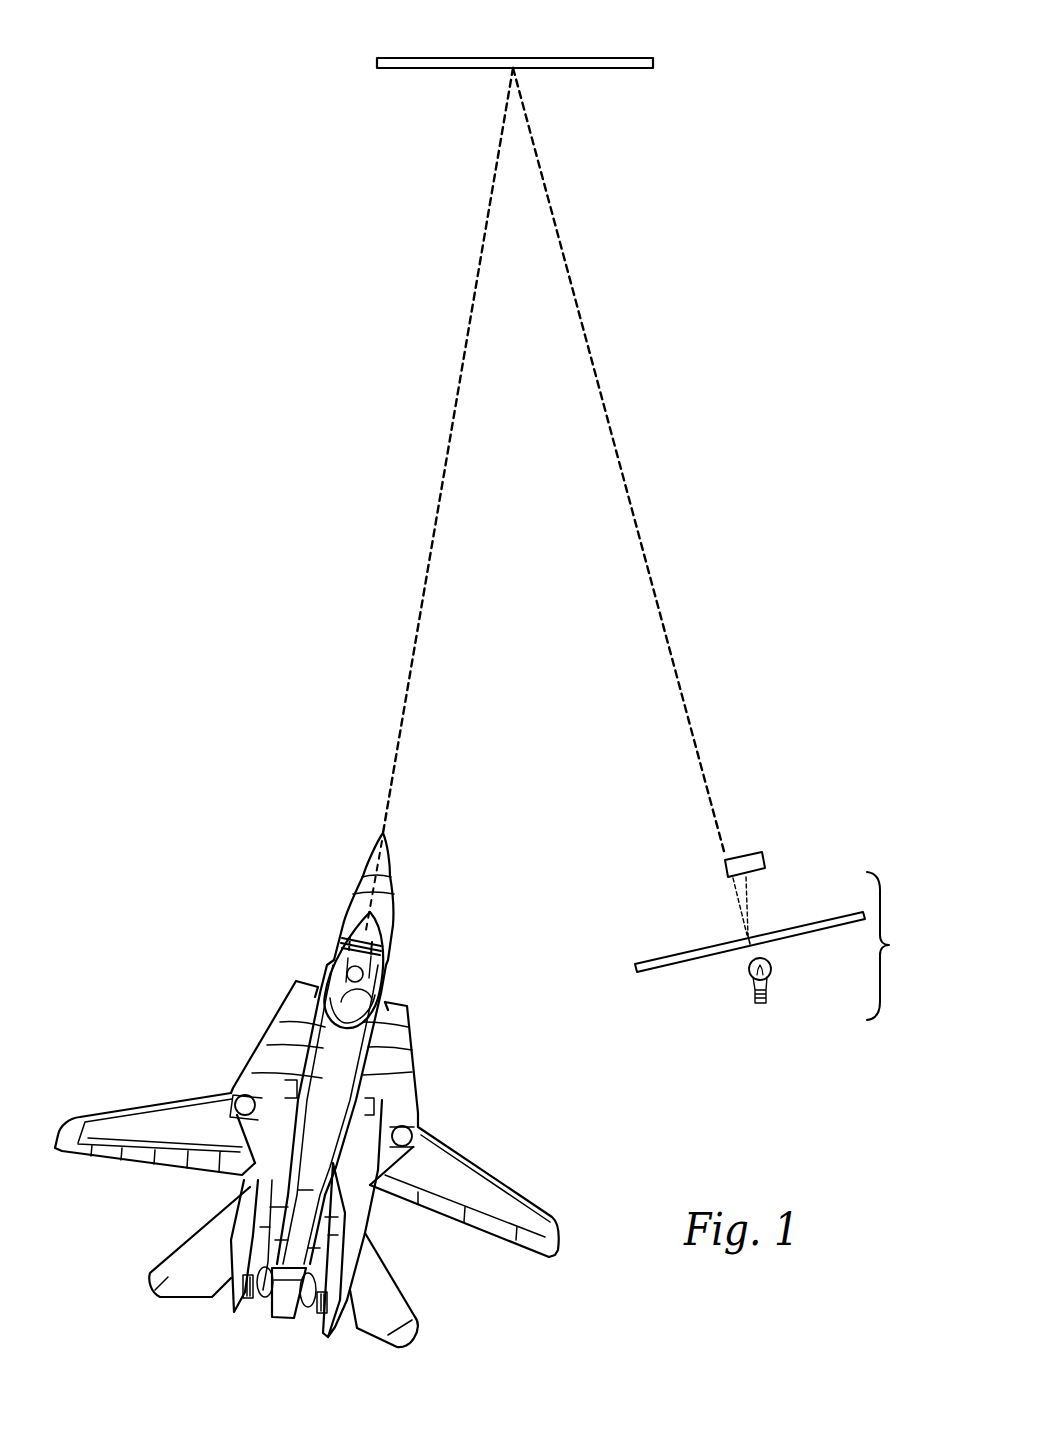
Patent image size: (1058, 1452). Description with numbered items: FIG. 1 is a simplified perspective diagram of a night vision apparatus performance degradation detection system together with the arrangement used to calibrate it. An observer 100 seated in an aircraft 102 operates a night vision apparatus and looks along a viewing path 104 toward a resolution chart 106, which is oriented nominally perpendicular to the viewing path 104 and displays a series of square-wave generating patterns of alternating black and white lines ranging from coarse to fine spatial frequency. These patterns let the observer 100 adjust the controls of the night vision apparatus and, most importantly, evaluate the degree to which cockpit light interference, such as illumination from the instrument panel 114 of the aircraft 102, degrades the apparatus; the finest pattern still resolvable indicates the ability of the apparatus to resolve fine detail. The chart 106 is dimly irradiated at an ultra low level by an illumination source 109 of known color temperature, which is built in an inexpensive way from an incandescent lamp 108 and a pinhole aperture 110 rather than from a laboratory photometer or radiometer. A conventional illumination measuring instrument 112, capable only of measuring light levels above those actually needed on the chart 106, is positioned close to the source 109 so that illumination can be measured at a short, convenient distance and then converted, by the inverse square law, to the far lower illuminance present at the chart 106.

The observer 100 is at (346, 957).
The aircraft 102 is at (307, 1090).
The viewing path 104 is at (461, 374).
The resolution chart 106 is at (427, 58).
The lamp 108 is at (750, 974).
The illumination source 109 is at (743, 925).
The pinhole aperture 110 is at (658, 957).
The illumination measuring instrument 112 is at (760, 852).
The instrument panel 114 is at (343, 937).